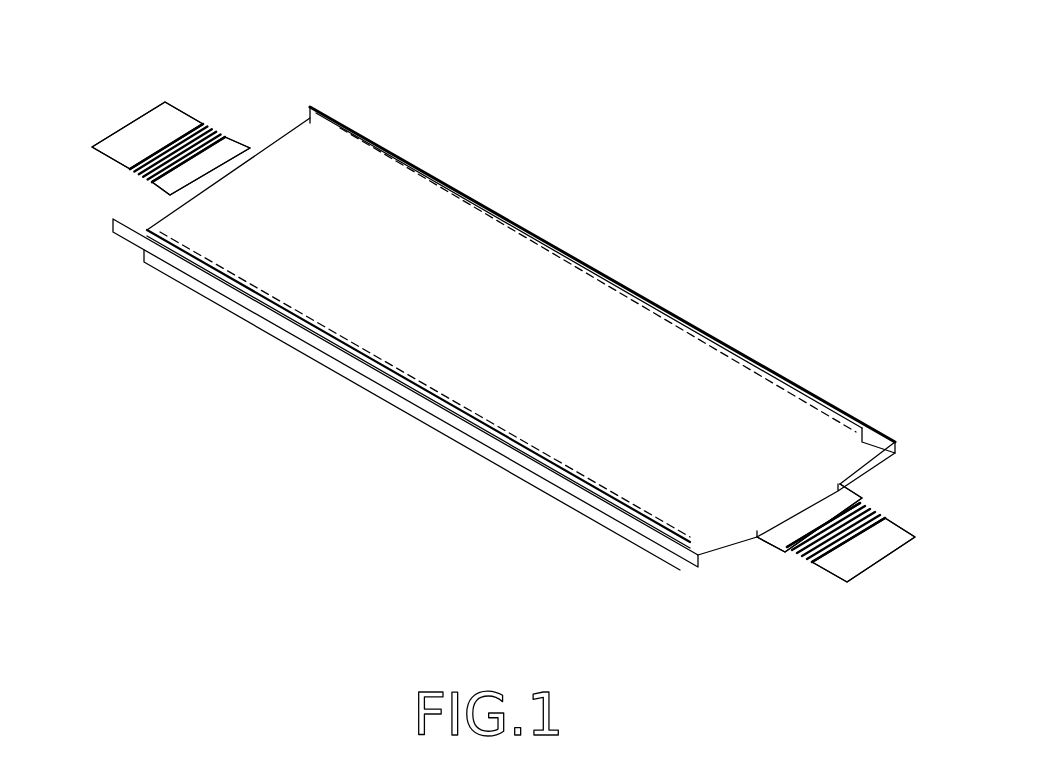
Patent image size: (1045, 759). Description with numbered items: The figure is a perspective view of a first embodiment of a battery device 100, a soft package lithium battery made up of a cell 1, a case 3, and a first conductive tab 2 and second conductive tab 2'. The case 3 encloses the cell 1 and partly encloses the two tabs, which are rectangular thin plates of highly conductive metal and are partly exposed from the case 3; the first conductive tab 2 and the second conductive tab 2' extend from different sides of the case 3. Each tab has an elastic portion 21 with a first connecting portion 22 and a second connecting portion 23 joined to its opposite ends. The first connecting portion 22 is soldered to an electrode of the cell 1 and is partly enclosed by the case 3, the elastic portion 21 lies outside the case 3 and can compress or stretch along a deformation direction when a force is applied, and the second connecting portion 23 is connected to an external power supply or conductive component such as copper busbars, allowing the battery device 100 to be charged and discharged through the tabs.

The battery device 100 is at (678, 63).
The cell 1 is at (572, 254).
The case 3 is at (478, 197).
The first conductive tab 2 is at (852, 508).
The second conductive tab 2' is at (181, 119).
The elastic portion 21 is at (140, 178).
The first connecting portion 22 is at (170, 195).
The second connecting portion 23 is at (128, 125).